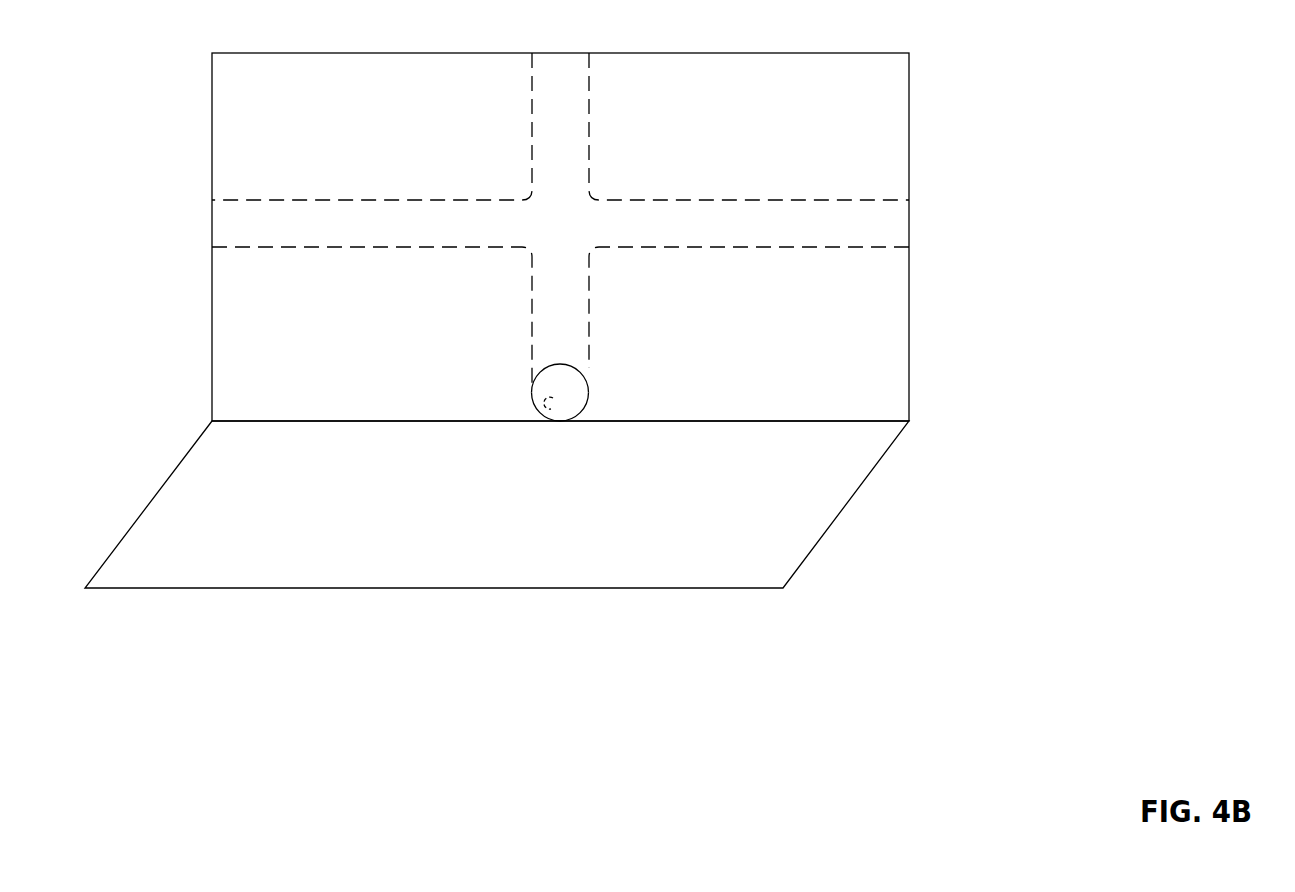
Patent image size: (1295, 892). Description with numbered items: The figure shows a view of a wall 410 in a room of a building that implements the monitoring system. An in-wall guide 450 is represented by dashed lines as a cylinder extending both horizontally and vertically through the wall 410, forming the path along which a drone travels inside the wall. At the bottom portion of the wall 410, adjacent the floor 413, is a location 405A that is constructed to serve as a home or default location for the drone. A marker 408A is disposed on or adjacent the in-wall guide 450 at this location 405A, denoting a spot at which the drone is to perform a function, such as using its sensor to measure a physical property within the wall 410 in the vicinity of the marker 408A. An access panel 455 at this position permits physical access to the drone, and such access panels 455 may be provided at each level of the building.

The wall 410 is at (872, 60).
The floor 413 is at (442, 577).
The in-wall guide 450 is at (567, 65).
The location 405A is at (601, 357).
The access panel 455 is at (590, 398).
The marker 408A is at (541, 400).